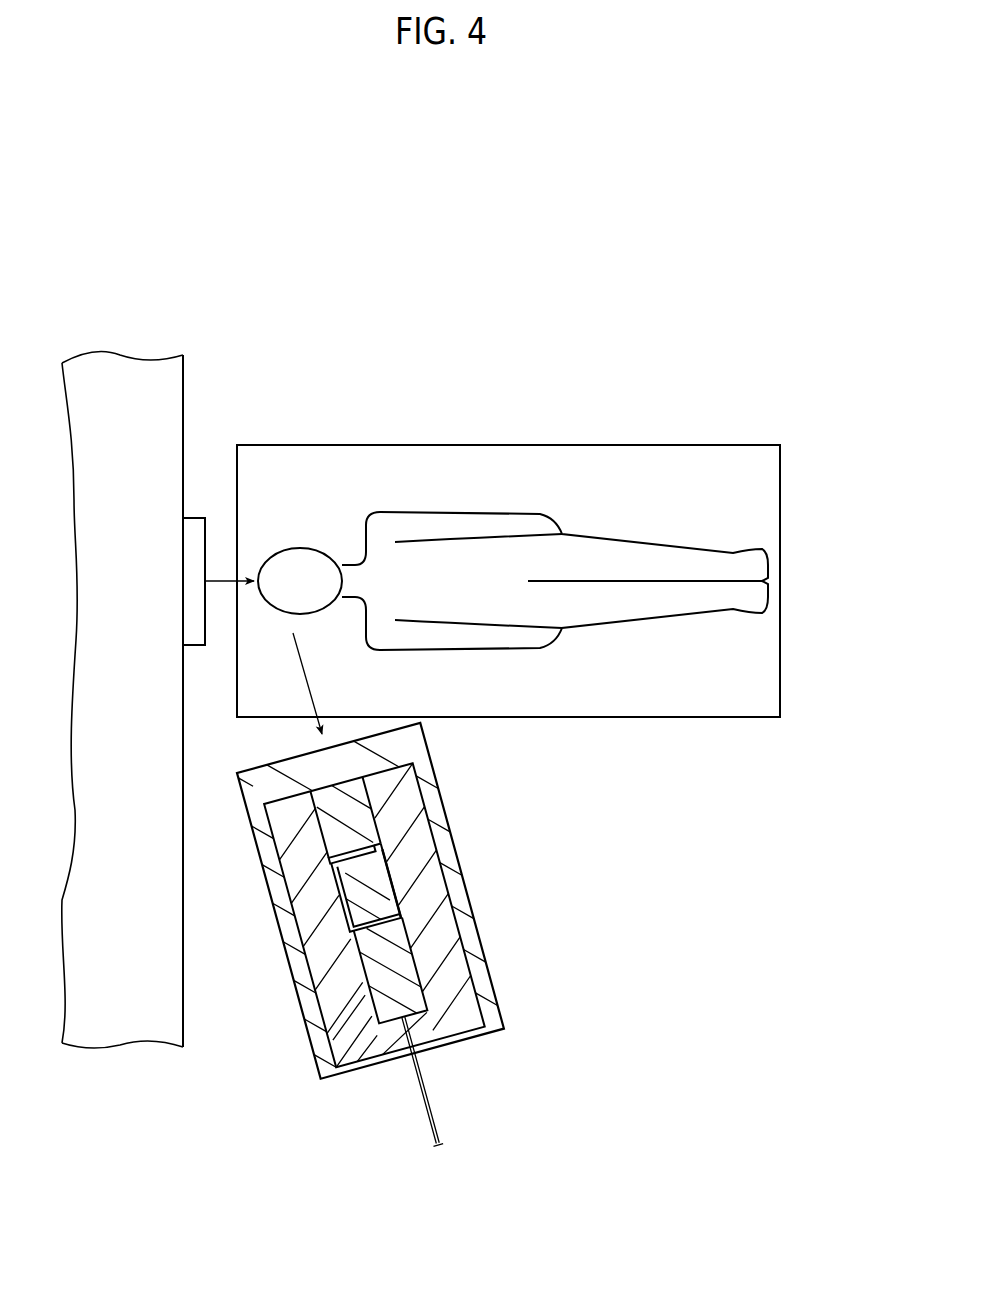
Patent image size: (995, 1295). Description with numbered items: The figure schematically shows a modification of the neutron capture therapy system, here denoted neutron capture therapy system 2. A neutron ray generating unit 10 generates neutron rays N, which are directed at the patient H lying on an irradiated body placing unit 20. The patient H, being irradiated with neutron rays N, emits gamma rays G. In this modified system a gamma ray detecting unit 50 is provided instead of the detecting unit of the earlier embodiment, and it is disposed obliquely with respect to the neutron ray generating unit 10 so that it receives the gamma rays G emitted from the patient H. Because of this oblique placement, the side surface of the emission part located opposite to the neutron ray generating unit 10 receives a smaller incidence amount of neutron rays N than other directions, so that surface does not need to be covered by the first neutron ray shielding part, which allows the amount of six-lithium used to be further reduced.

The neutron capture therapy system 2 is at (814, 317).
The neutron ray generating unit 10 is at (192, 304).
The irradiated body placing unit 20 is at (682, 462).
The patient H is at (478, 556).
The neutron rays N is at (228, 583).
The gamma rays G is at (303, 682).
The gamma ray detecting unit 50 is at (554, 1030).